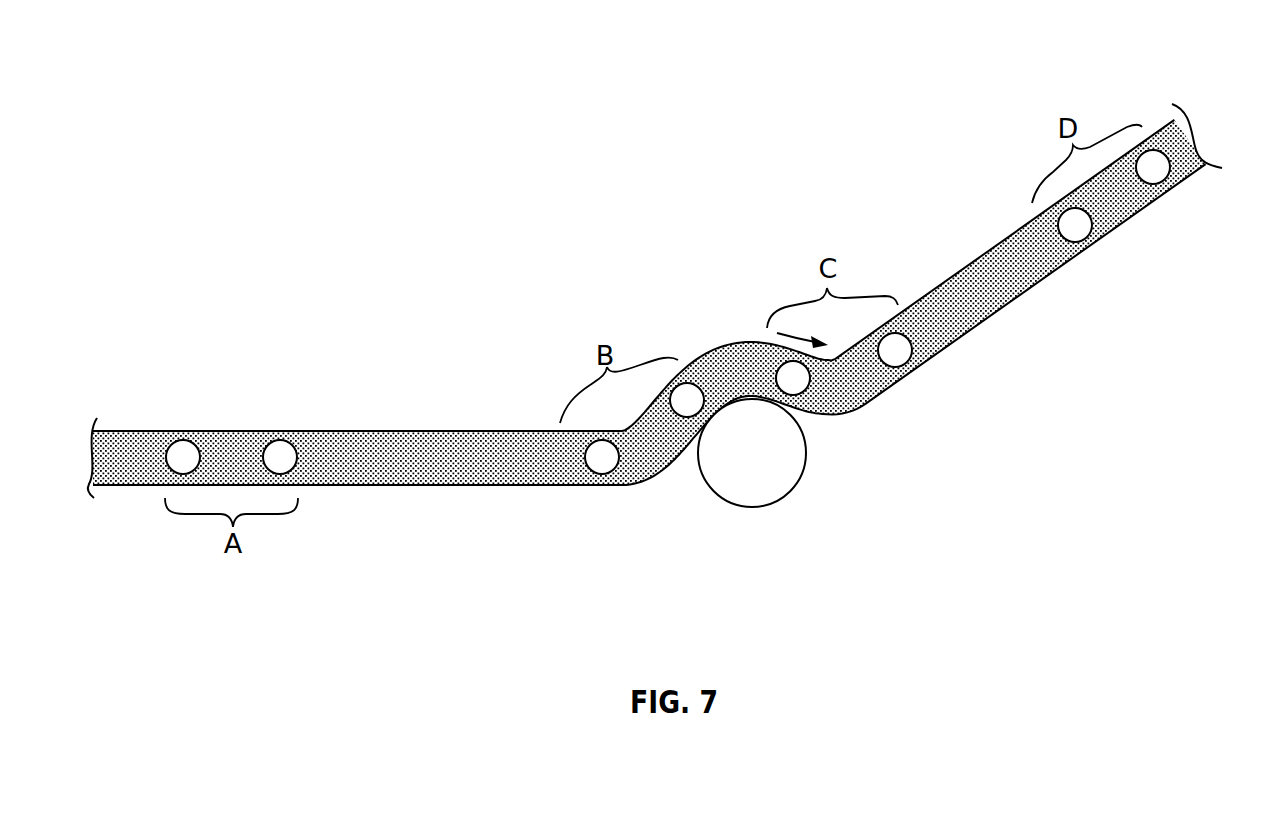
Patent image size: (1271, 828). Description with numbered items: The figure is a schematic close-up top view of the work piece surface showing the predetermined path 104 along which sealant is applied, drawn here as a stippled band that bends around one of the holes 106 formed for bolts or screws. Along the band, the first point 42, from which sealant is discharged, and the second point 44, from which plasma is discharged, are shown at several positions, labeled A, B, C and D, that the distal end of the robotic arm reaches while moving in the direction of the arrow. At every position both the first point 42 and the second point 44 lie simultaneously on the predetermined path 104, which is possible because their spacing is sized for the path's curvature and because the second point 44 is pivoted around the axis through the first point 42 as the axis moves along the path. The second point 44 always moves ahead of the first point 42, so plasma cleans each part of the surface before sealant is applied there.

The first point 42 is at (182, 440).
The second point 44 is at (280, 440).
The predetermined path 104 is at (438, 431).
The holes 106 is at (753, 508).